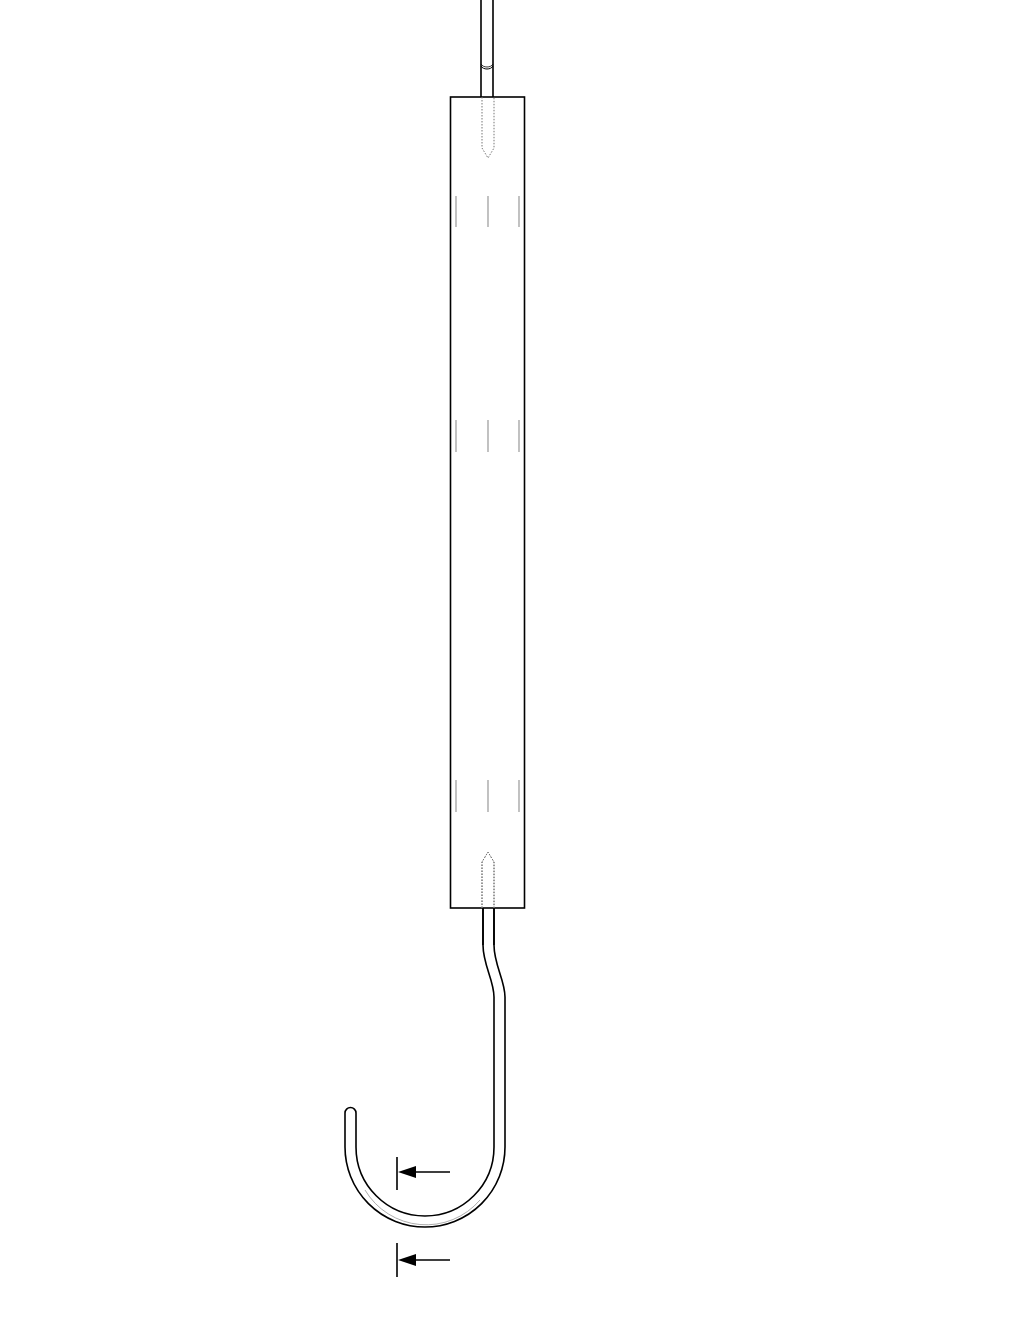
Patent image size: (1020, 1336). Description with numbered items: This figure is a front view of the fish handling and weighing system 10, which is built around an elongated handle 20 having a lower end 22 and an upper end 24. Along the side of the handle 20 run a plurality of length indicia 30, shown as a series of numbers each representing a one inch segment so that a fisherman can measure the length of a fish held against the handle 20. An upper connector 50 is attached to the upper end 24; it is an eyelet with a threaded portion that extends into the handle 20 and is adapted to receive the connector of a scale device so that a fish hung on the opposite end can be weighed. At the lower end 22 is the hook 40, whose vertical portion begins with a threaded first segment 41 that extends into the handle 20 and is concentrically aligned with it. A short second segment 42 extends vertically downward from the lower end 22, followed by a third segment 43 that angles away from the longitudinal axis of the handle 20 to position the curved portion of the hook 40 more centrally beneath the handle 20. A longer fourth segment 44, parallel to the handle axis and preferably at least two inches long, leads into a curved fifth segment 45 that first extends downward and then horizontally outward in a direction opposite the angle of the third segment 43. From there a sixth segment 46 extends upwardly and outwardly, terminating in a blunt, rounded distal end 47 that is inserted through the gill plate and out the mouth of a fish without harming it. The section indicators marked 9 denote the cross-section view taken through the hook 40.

The fish handling and weighing system 10 is at (210, 184).
The handle 20 is at (525, 502).
The lower end 22 is at (513, 909).
The upper end 24 is at (462, 97).
The length indicia 30 is at (500, 325).
The hook 40 is at (419, 1074).
The first segment 41 is at (479, 875).
The second segment 42 is at (484, 928).
The third segment 43 is at (490, 975).
The fourth segment 44 is at (505, 1048).
The fifth segment 45 is at (376, 1190).
The sixth segment 46 is at (345, 1133).
The distal end 47 is at (345, 1108).
The upper connector 50 is at (494, 22).
The section line 9- 9 is at (439, 1216).